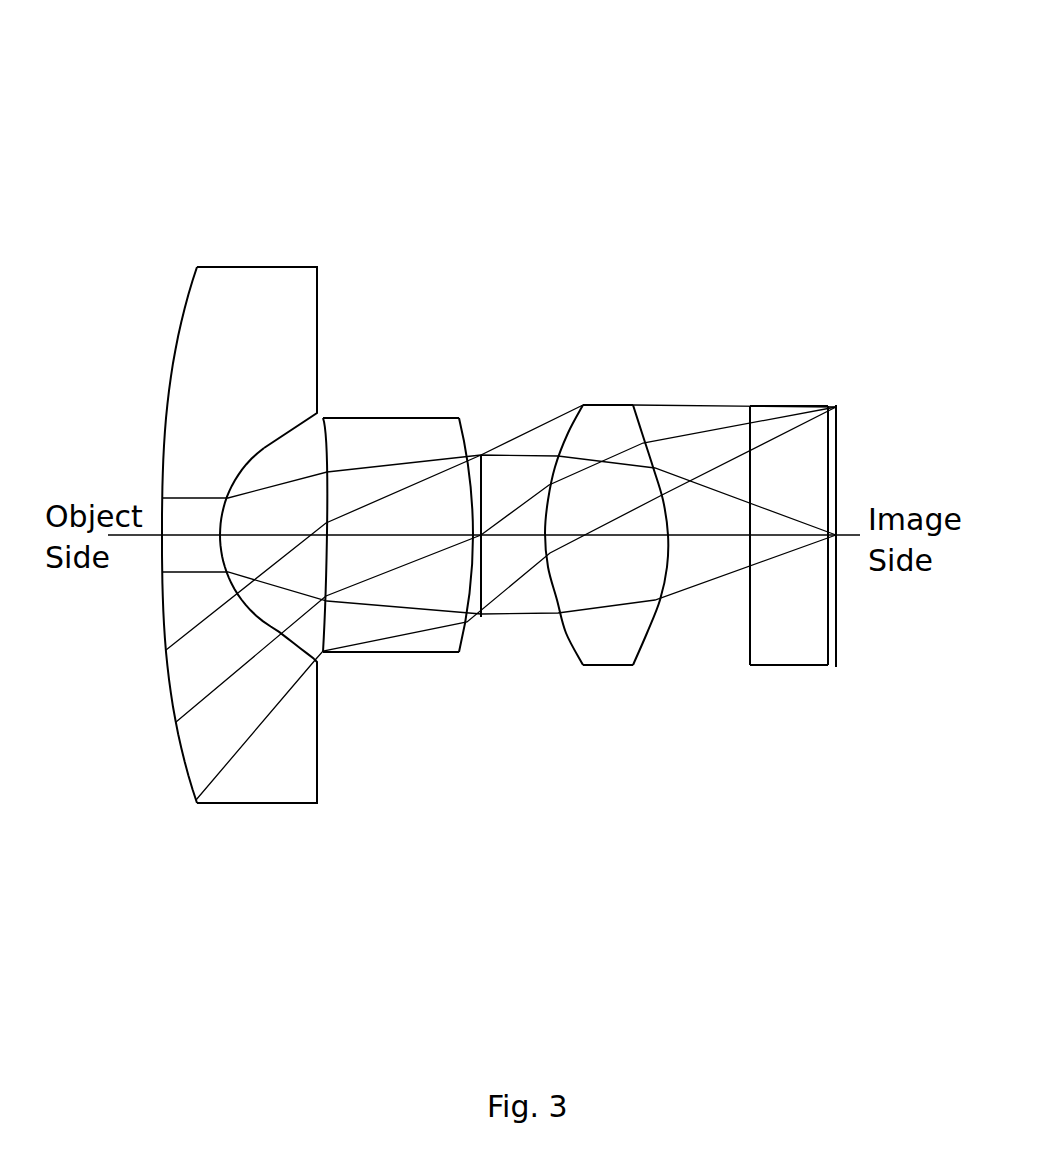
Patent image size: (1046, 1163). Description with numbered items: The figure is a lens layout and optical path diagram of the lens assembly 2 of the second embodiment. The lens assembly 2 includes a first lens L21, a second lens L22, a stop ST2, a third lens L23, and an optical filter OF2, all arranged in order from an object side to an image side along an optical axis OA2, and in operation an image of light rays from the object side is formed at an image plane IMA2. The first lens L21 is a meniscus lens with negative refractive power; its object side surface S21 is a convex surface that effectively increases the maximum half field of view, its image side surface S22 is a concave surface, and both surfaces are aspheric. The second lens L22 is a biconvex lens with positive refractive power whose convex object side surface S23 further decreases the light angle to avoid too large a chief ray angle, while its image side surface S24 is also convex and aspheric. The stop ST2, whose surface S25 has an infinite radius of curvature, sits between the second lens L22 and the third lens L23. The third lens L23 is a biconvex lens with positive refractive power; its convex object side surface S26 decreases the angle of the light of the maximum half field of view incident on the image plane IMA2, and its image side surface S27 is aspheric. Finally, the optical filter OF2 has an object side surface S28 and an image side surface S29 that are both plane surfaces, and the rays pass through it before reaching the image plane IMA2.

The lens assembly 2 is at (76, 29).
The first lens L21 is at (260, 267).
The second lens L22 is at (396, 419).
The third lens L23 is at (608, 404).
The stop ST2 is at (481, 455).
The optical filter OF2 is at (793, 407).
The image plane IMA2 is at (836, 407).
The optical axis OA2 is at (137, 537).
The object side surface of the first lens S21 is at (168, 673).
The image side surface of the first lens S22 is at (258, 615).
The object side surface of the second lens S23 is at (328, 577).
The image side surface of the second lens S24 is at (467, 577).
The stop surface S25 is at (481, 617).
The object side surface of the third lens S26 is at (563, 623).
The image side surface of the third lens S27 is at (653, 617).
The object side surface of the optical filter S28 is at (749, 613).
The image side surface of the optical filter S29 is at (827, 620).